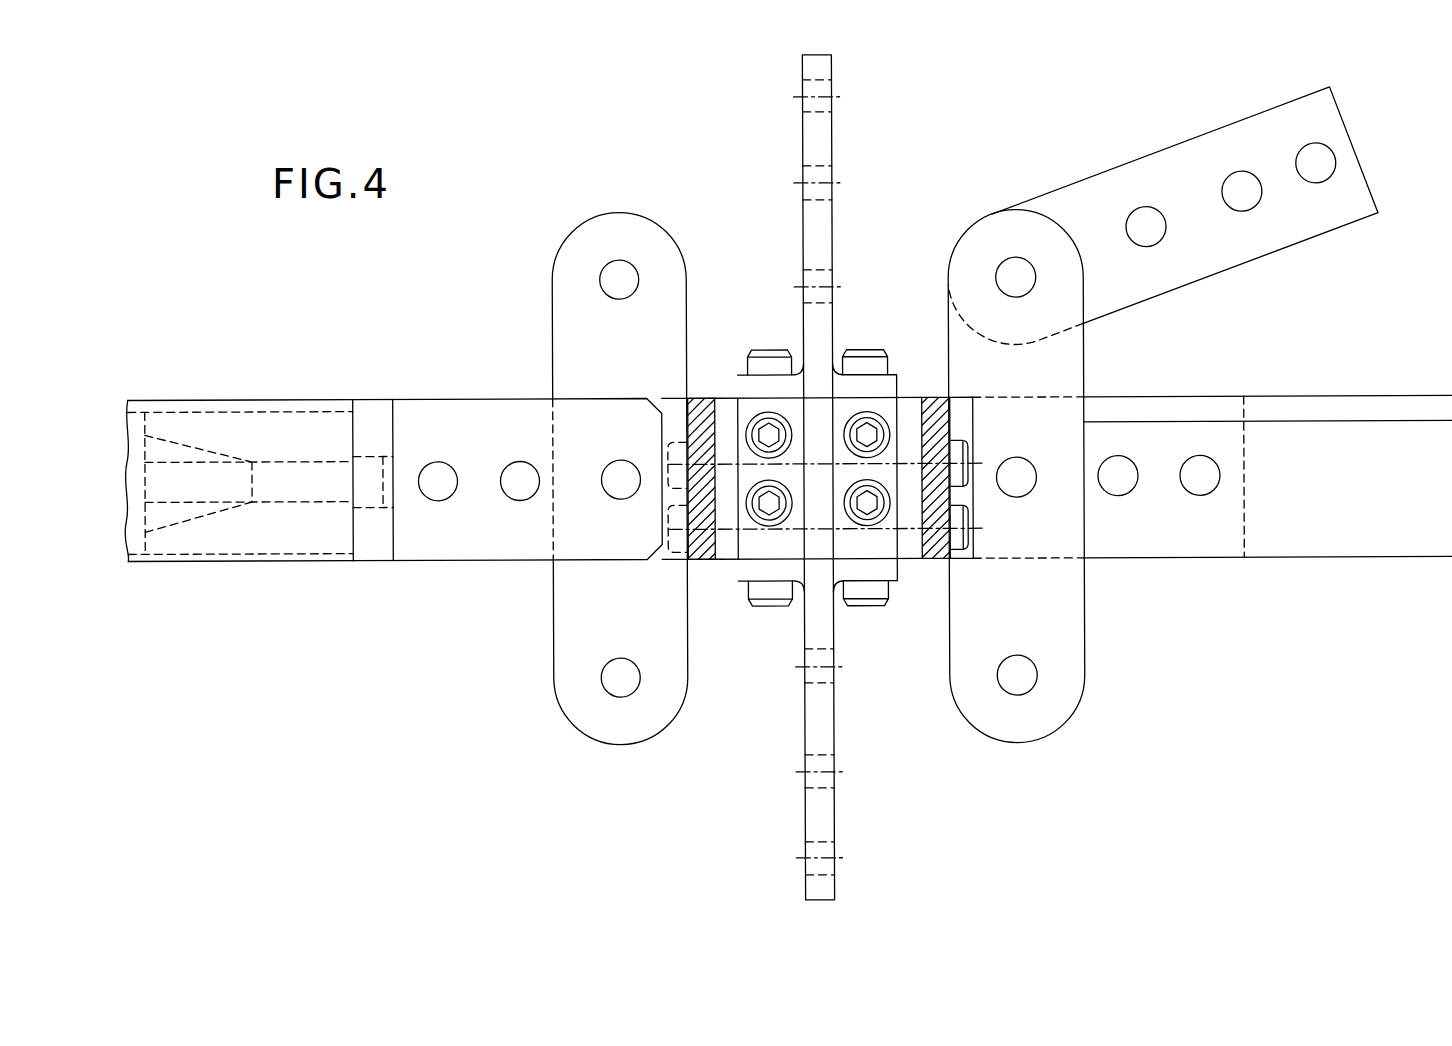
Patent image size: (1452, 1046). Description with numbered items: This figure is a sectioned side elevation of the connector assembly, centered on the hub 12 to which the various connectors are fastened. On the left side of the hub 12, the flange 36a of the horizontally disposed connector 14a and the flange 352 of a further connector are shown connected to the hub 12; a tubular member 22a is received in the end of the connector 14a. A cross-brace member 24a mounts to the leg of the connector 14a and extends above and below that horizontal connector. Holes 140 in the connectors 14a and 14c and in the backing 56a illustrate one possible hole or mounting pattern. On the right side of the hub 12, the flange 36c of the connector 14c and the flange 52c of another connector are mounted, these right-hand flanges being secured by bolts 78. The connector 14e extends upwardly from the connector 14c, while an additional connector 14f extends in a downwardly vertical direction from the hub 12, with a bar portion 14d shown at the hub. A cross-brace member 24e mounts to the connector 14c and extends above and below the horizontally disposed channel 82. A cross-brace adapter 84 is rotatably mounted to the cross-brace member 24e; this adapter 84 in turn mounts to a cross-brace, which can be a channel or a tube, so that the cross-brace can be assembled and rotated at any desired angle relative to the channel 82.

The tubular member 22a is at (277, 398).
The connector 14a is at (393, 560).
The backing 56a is at (464, 540).
The holes 140 is at (611, 462).
The cross-brace member 24a is at (582, 217).
The flange 352 is at (703, 398).
The flange 36a is at (728, 398).
The hub 12 is at (823, 482).
The bar member 14d is at (758, 546).
The flange 36c is at (900, 588).
The connector 14e is at (834, 141).
The connector 14f is at (804, 819).
The flange 52c is at (937, 562).
The bolts 78 is at (973, 452).
The cross-brace member 24e is at (1085, 365).
The cross-brace adapter 84 is at (1186, 142).
The connector 14c is at (1245, 557).
The channel 82 is at (1340, 492).